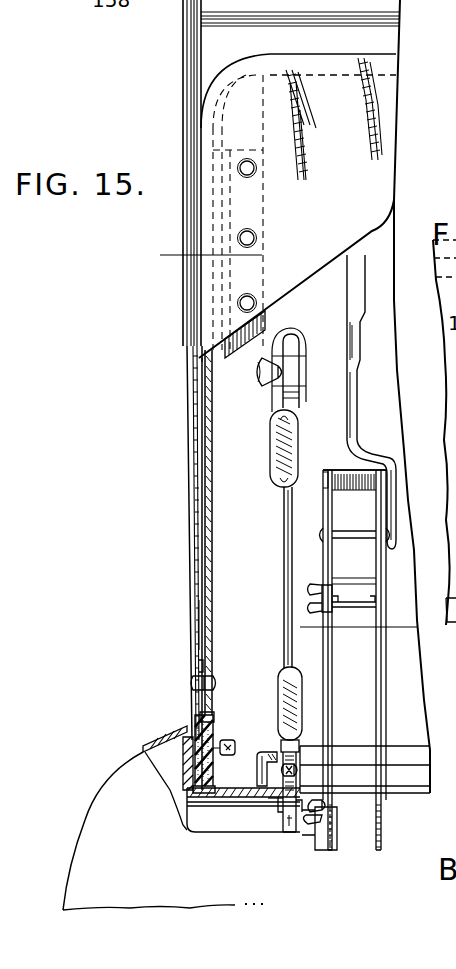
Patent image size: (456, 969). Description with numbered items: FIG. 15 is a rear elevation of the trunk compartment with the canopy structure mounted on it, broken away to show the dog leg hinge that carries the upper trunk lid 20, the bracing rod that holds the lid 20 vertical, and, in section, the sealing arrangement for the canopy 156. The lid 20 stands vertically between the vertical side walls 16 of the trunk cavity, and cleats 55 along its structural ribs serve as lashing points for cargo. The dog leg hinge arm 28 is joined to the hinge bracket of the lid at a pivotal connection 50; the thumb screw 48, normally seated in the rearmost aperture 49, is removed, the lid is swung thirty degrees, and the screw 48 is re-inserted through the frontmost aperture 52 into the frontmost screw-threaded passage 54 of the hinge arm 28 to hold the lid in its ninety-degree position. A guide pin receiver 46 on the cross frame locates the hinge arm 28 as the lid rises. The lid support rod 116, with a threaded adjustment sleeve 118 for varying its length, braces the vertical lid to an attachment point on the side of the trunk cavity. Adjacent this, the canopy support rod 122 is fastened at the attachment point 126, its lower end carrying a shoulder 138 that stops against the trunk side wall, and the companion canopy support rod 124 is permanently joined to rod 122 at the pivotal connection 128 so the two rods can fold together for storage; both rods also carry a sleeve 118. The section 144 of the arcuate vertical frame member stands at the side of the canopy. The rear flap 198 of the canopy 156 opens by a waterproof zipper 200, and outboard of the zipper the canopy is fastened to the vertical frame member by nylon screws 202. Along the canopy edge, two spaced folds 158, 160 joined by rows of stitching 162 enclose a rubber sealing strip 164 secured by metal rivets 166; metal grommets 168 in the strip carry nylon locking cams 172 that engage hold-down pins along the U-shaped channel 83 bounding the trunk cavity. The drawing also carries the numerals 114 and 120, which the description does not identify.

The lid section 20 is at (184, 78).
The top frame member 114 is at (400, 3).
The cross member 120 is at (386, 52).
The canopy 156 is at (372, 126).
The vertical side walls 16 is at (277, 252).
The waterproof zippers 200 is at (300, 232).
The flap 198 is at (328, 256).
The nylon screws 202 is at (240, 300).
The cleats 55 is at (365, 315).
The section of vertical frame member 144 is at (239, 352).
The threaded adjustment sleeve 118 is at (290, 447).
The lid support rod 116 is at (290, 634).
The canopy support rod 122 is at (298, 742).
The canopy support rod 124 is at (297, 748).
The dog leg hinge arm 28 is at (385, 698).
The rearmost aperture 49 is at (327, 470).
The pivotal connection 50 is at (320, 540).
The frontmost aperture 52 is at (378, 572).
The frontmost screw-threaded passage 54 is at (372, 590).
The thumb screw 48 is at (348, 610).
The fold 158 is at (210, 666).
The fold 160 is at (198, 666).
The rows of stitching 162 is at (196, 642).
The metal rivets 166 is at (192, 684).
The rubber sealing strip 164 is at (190, 724).
The metal grommets 168 is at (215, 724).
The locking cam 172 is at (234, 746).
The U-shaped channel 83 is at (268, 784).
The shoulder 138 is at (277, 805).
The pivotal connection 128 is at (268, 798).
The attachment point 126 is at (293, 832).
The guide pin receiver 46 is at (337, 793).